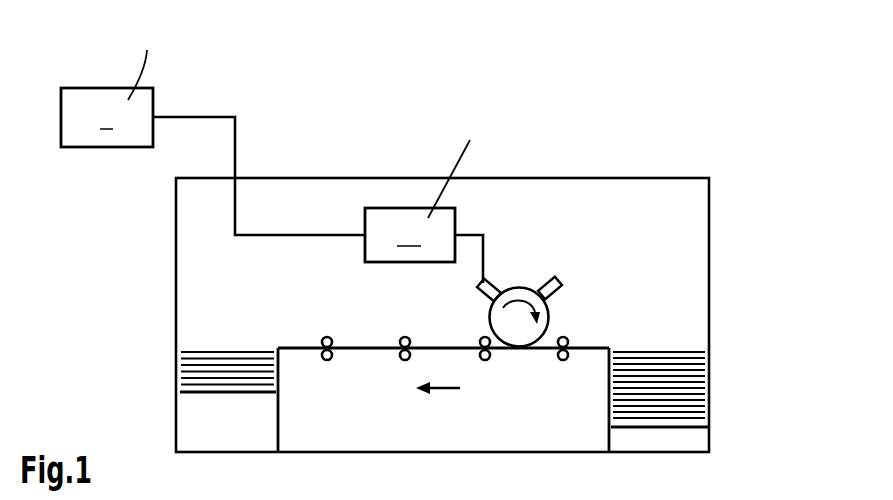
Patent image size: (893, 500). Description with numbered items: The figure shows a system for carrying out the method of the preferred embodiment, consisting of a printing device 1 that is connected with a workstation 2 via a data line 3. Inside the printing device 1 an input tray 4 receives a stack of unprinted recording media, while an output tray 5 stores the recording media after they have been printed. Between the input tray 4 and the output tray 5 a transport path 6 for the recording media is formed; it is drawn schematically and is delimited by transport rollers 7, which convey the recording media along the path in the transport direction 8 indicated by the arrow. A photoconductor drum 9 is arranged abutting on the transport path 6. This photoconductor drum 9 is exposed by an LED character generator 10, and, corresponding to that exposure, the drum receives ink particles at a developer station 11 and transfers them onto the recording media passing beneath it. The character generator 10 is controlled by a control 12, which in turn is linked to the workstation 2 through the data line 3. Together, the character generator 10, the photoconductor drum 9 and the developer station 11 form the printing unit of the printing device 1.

The printing device 1 is at (716, 110).
The workstation 2 is at (190, 82).
The data line 3 is at (236, 140).
The input tray 4 is at (700, 409).
The output tray 5 is at (176, 369).
The transport path 6 is at (508, 362).
The transport rollers 7 is at (327, 361).
The transport direction 8 is at (446, 390).
The photoconductor drum 9 is at (519, 287).
The character generator 10 is at (482, 299).
The developer station 11 is at (558, 296).
The control 12 is at (480, 199).